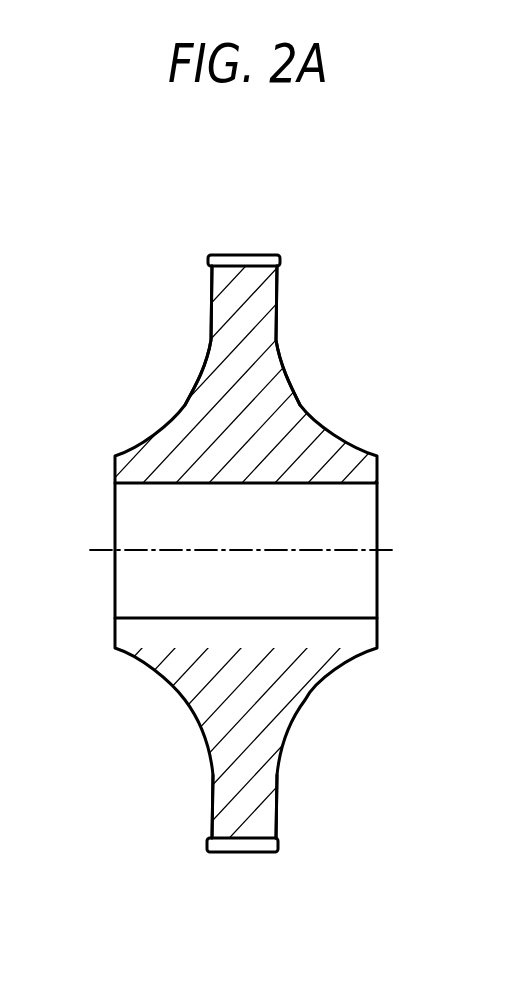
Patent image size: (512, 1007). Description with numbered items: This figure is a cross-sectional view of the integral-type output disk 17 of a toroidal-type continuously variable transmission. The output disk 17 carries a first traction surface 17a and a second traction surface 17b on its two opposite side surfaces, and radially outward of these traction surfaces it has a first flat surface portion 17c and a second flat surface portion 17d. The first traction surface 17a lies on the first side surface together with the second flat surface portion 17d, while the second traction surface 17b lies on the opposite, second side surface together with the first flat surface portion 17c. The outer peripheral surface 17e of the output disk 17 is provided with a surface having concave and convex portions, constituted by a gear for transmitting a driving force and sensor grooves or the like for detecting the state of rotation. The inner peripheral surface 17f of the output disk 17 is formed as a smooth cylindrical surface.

The integral-type output disk 17 is at (328, 698).
The first traction surface 17a is at (200, 372).
The second traction surface 17b is at (283, 332).
The first flat surface portion 17c is at (278, 830).
The second flat surface portion 17d is at (208, 834).
The outer peripheral surface 17e is at (242, 254).
The inner peripheral surface 17f is at (305, 483).